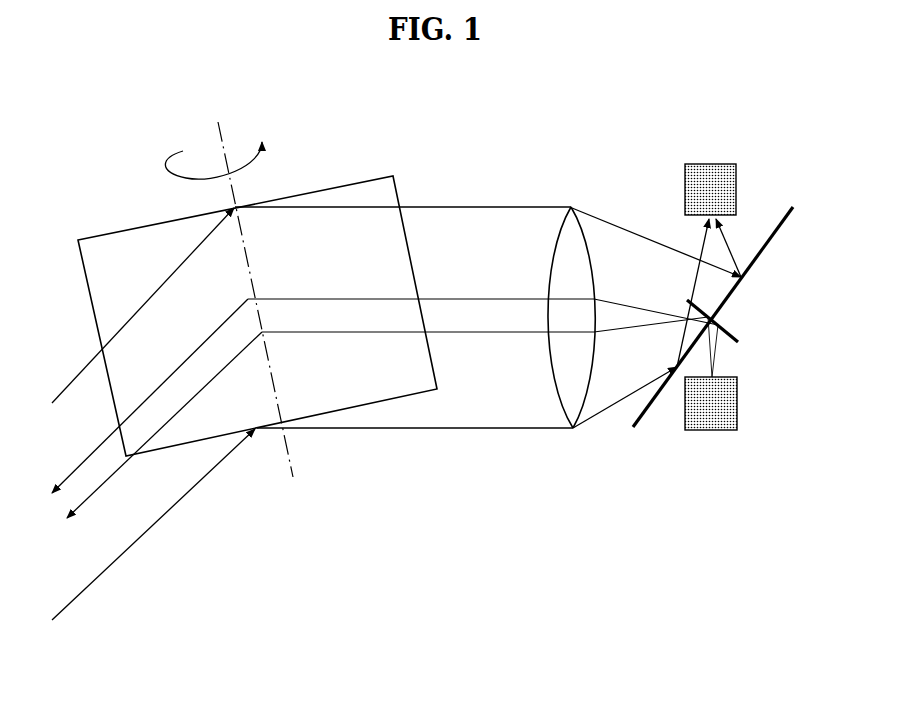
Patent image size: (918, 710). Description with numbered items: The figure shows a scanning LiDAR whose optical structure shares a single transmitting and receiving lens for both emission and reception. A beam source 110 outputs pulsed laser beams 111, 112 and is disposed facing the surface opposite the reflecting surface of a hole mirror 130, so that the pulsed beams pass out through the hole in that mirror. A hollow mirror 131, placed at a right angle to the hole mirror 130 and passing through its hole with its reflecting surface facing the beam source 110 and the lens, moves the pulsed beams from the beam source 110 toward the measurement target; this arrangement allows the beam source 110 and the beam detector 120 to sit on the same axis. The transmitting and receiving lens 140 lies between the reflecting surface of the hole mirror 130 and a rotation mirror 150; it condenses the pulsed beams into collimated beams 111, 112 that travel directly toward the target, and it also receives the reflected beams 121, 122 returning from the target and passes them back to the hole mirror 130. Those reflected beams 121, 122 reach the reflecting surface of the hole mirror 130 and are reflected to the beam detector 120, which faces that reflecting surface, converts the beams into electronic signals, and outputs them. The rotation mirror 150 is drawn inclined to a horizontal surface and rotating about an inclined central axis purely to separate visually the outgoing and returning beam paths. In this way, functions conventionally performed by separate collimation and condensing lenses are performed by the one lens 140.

The beam source 110 is at (718, 425).
The pulsed laser beam 111 is at (472, 335).
The pulsed laser beam 112 is at (475, 298).
The beam detector 120 is at (720, 170).
The reflected beam 121 is at (453, 429).
The reflected beam 122 is at (485, 206).
The hole mirror 130 is at (763, 250).
The hollow mirror 131 is at (738, 342).
The transmitting and receiving lens 140 is at (573, 226).
The rotation mirror 150 is at (355, 184).